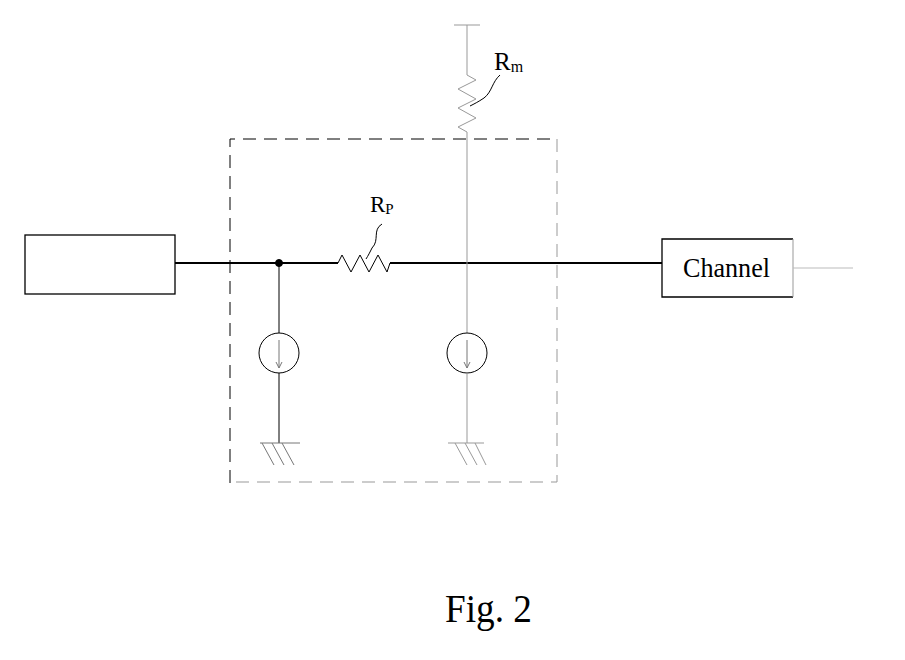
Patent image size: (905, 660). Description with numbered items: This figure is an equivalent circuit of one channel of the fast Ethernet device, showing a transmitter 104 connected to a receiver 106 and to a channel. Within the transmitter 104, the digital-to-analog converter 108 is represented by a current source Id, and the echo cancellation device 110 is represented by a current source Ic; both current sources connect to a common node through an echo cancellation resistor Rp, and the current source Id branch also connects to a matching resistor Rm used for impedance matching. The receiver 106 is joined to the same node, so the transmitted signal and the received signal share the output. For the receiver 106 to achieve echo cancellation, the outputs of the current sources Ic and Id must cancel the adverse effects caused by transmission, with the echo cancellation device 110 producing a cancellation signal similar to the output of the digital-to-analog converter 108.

The transmitter 104 is at (557, 368).
The receiver 106 is at (97, 294).
The digital-to-analog converter 108 is at (487, 353).
The echo cancellation device 110 is at (299, 353).